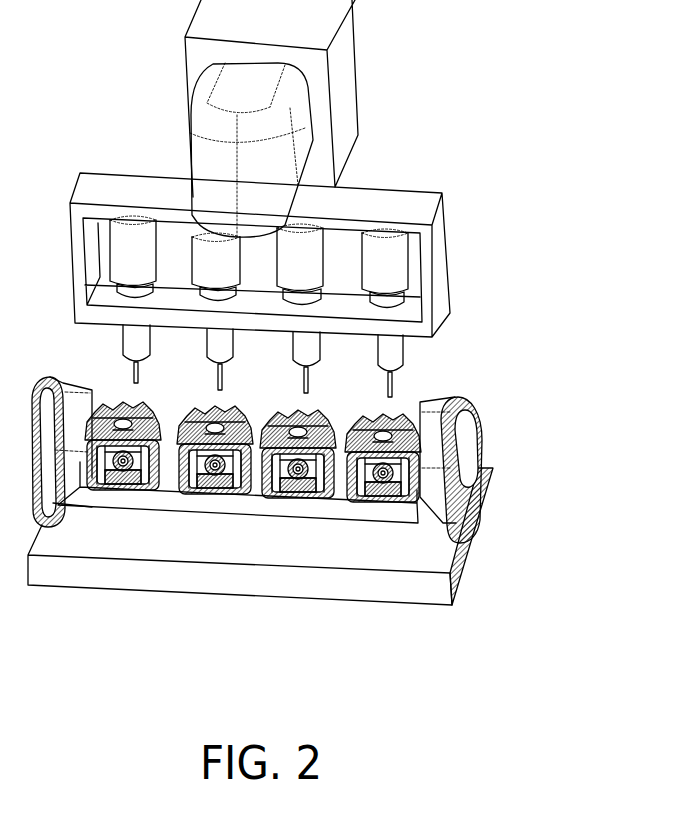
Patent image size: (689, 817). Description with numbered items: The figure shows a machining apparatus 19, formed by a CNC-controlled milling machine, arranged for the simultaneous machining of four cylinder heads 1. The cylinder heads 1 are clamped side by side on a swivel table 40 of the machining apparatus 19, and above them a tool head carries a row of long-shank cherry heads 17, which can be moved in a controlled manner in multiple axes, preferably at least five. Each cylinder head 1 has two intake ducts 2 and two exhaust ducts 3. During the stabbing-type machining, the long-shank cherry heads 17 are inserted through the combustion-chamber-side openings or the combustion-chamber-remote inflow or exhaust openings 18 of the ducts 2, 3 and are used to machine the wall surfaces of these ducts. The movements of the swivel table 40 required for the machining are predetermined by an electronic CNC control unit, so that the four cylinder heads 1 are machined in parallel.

The cylinder head 1 is at (239, 468).
The intake duct 2 is at (253, 435).
The exhaust duct 3 is at (143, 406).
The long-shank cherry head 17 is at (360, 378).
The combustion-chamber-remote opening 18 is at (298, 490).
The machining apparatus 19 is at (292, 321).
The swivel table 40 is at (477, 565).